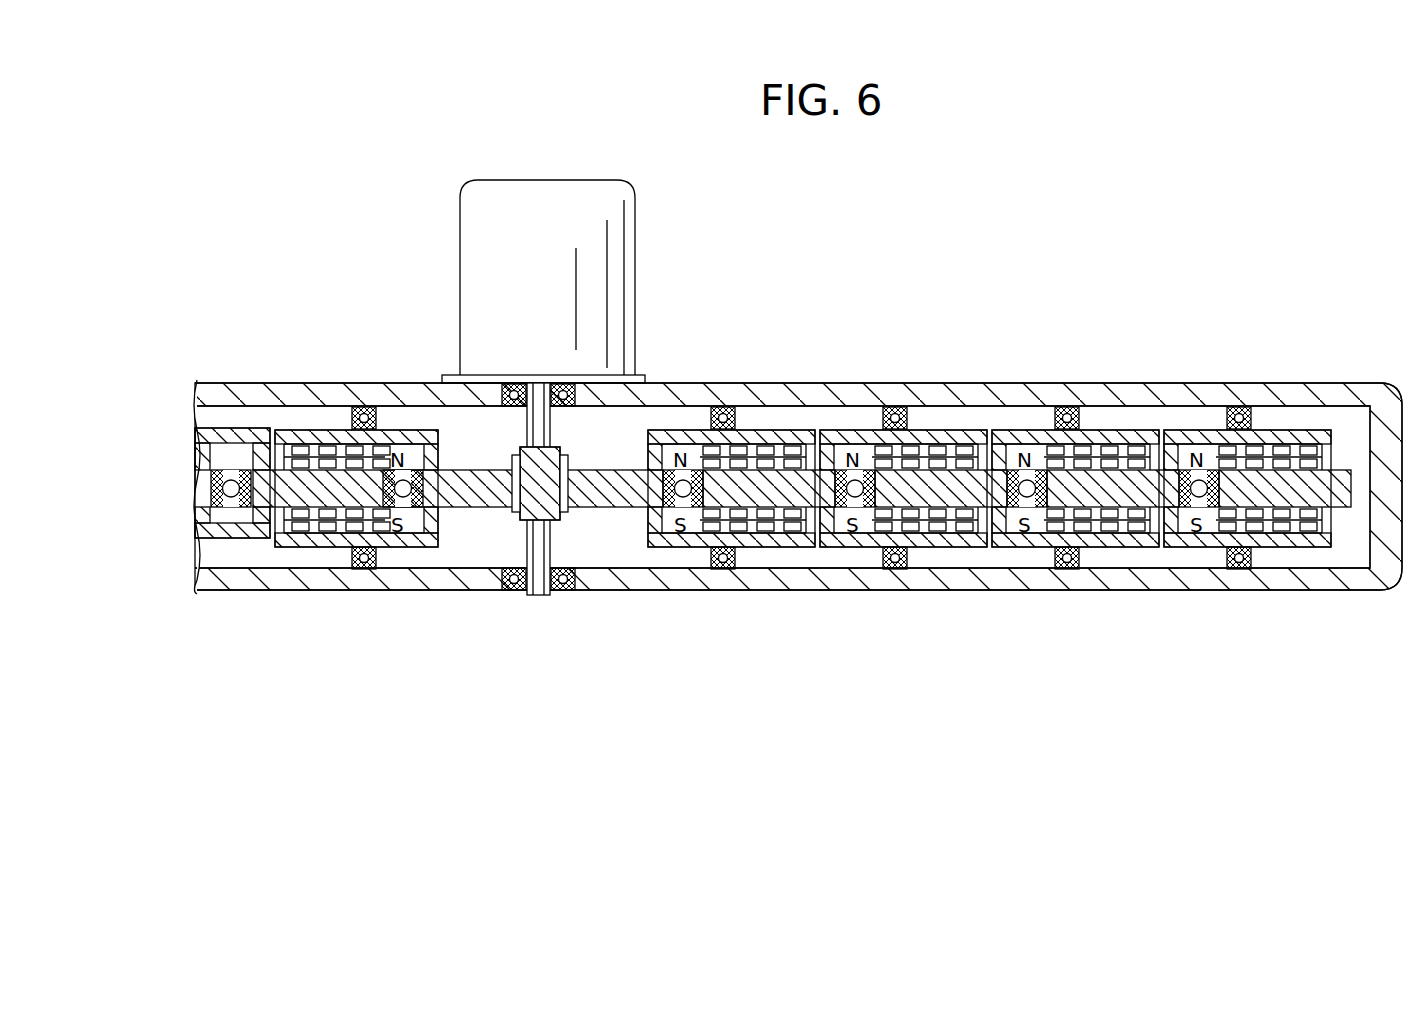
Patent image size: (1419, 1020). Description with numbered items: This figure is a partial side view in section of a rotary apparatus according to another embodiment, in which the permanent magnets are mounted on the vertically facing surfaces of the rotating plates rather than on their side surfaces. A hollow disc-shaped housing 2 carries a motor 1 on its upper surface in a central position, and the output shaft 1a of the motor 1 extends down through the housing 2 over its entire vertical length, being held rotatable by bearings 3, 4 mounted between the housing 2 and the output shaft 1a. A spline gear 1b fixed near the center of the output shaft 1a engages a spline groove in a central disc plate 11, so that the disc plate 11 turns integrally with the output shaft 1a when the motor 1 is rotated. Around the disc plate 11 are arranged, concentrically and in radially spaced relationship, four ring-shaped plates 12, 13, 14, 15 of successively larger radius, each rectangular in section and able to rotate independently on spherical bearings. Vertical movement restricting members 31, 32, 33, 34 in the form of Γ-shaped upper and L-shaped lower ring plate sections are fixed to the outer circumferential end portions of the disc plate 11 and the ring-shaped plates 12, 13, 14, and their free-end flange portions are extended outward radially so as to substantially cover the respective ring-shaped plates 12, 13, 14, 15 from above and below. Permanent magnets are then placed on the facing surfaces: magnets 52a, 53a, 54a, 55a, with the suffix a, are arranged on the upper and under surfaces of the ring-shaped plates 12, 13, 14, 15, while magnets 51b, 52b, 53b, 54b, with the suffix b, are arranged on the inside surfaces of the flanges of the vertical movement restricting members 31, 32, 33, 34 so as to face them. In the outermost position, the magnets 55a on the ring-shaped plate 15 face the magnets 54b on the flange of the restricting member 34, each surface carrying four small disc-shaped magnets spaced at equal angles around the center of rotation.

The motor 1 is at (627, 208).
The output shaft 1a is at (537, 590).
The spline gear 1b is at (568, 452).
The housing 2 is at (1398, 405).
The bearing 3 is at (500, 590).
The bearing 4 is at (505, 383).
The disc plate 11 is at (622, 490).
The ring-shaped plate 12 is at (815, 485).
The ring-shaped plate 13 is at (990, 485).
The ring-shaped plate 14 is at (1178, 485).
The ring-shaped plate 15 is at (1345, 485).
The vertical movement restricting member 31 is at (768, 432).
The vertical movement restricting member 32 is at (946, 432).
The vertical movement restricting member 33 is at (1117, 432).
The vertical movement restricting member 34 is at (1307, 432).
The permanent magnet 51b is at (700, 447).
The permanent magnet 52a is at (788, 447).
The permanent magnet 52b is at (905, 462).
The permanent magnet 53a is at (985, 447).
The permanent magnet 53b is at (1048, 447).
The permanent magnet 54a is at (1130, 447).
The permanent magnet 54b is at (1268, 447).
The permanent magnet 55a is at (1280, 447).